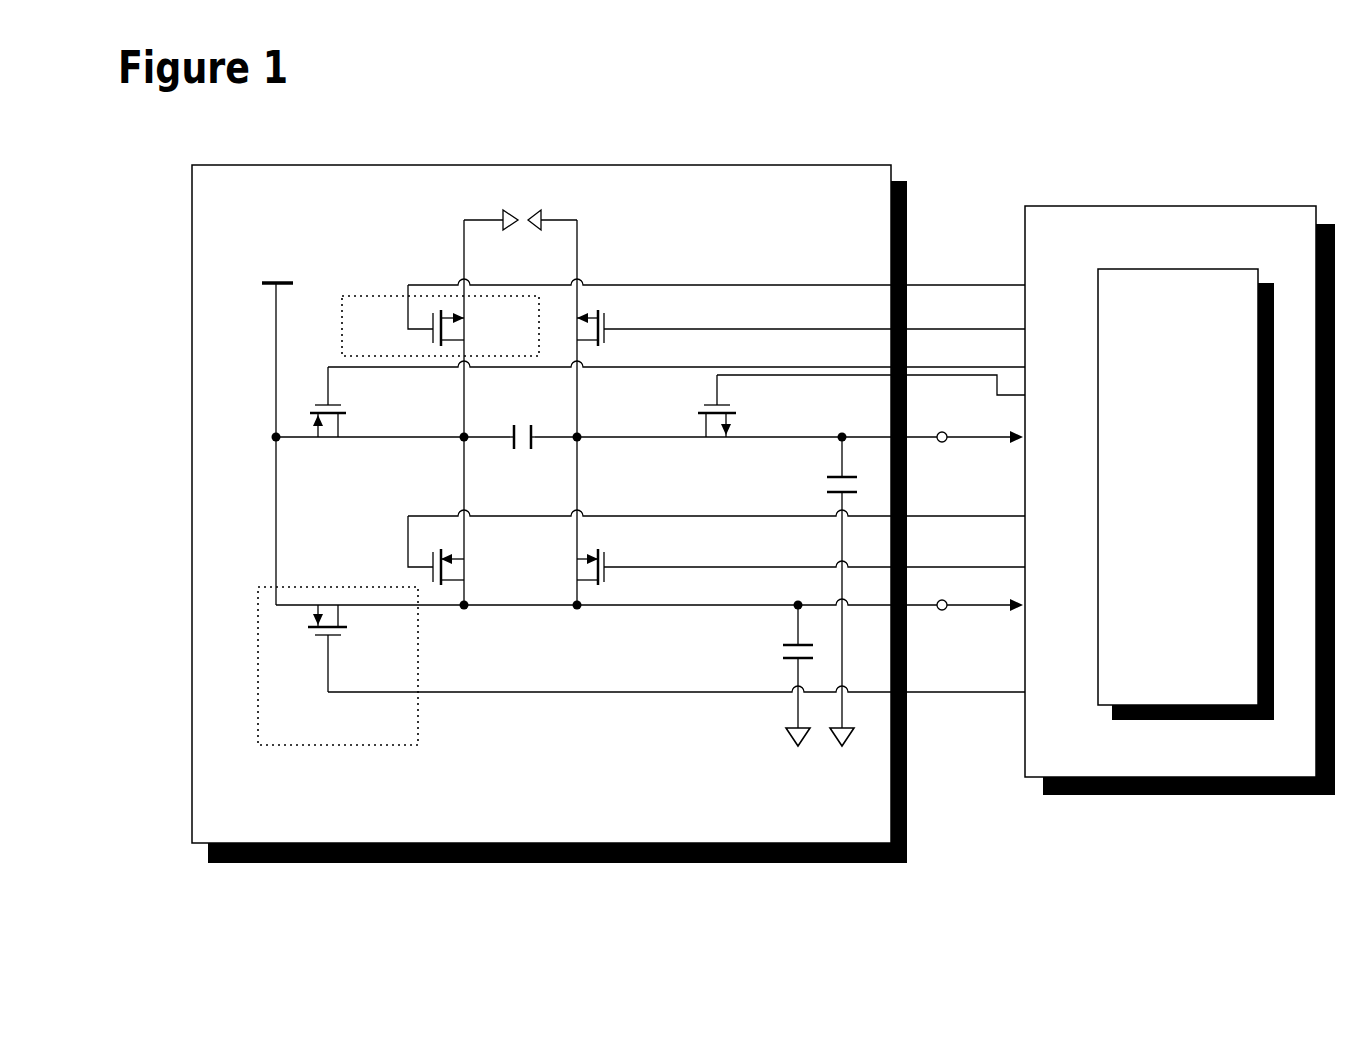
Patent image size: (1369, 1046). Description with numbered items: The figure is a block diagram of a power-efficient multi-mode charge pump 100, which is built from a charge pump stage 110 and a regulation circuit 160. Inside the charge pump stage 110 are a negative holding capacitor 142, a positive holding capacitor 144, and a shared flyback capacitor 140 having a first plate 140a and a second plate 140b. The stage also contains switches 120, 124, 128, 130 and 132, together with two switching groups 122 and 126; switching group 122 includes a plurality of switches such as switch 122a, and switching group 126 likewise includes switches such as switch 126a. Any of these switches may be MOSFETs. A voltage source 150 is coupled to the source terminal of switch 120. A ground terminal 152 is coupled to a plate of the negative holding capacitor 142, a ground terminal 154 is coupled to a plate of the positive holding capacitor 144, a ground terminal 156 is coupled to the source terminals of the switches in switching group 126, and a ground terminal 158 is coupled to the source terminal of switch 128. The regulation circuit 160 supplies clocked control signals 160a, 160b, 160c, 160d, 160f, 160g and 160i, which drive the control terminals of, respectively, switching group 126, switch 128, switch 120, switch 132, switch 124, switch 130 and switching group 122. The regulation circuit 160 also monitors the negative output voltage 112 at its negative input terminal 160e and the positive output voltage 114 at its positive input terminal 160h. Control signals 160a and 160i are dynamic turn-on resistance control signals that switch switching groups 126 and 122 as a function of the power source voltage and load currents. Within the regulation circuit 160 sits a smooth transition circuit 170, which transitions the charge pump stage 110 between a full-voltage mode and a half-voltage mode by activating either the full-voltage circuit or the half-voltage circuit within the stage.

The multi-mode charge pump 100 is at (1150, 157).
The charge pump stage 110 is at (549, 514).
The output voltage 112 is at (943, 443).
The output voltage 114 is at (943, 611).
The switch 120 is at (320, 430).
The switching group 122 is at (338, 666).
The switch 122a is at (332, 638).
The switch 124 is at (460, 580).
The switching group 126 is at (440, 320).
The switch 126a is at (492, 346).
The switch 128 is at (605, 326).
The switch 130 is at (604, 567).
The switch 132 is at (736, 412).
The shared flyback capacitor 140 is at (513, 440).
The first plate 140a is at (508, 450).
The second plate 140b is at (550, 412).
The negative holding capacitor 142 is at (827, 476).
The positive holding capacitor 144 is at (790, 641).
The voltage source 150 is at (273, 282).
The ground terminal 152 is at (842, 749).
The ground terminal 154 is at (797, 748).
The ground terminal 156 is at (503, 217).
The ground terminal 158 is at (533, 231).
The regulation circuit 160 is at (1185, 797).
The control signal 160a is at (745, 285).
The control signal 160b is at (843, 329).
The control signal 160c is at (705, 367).
The control signal 160d is at (900, 390).
The negative input terminal 160e is at (677, 437).
The control signal 160f is at (743, 516).
The control signal 160g is at (843, 567).
The positive input terminal 160h is at (679, 605).
The control signal 160i is at (702, 692).
The smooth transition circuit 170 is at (1186, 494).